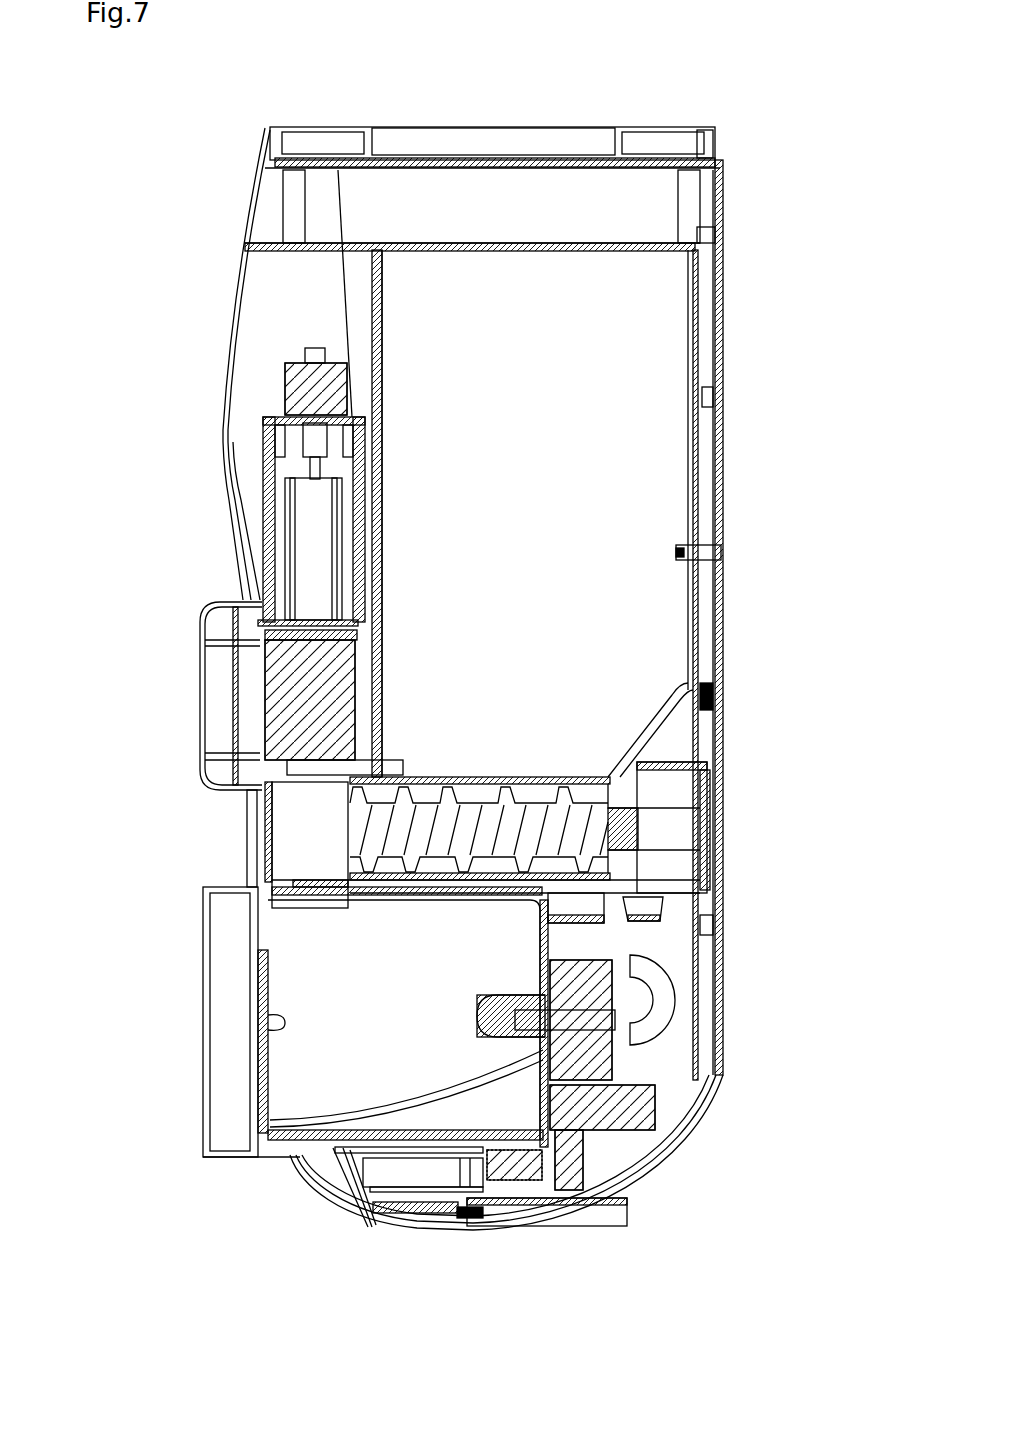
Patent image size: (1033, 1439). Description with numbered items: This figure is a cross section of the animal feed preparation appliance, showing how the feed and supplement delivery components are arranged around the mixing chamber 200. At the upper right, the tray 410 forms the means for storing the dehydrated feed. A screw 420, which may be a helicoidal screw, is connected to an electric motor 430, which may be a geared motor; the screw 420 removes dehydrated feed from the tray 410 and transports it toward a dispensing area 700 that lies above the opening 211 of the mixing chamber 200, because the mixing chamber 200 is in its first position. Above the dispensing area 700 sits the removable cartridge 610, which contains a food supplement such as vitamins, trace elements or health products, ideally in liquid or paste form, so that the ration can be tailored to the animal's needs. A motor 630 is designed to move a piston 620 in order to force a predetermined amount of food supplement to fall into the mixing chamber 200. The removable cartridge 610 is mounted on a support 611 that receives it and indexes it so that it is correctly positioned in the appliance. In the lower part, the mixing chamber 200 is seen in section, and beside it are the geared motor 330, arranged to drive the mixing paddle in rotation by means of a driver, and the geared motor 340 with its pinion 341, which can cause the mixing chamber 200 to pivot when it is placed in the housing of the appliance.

The mixing chamber 200 is at (298, 958).
The opening 211 is at (312, 895).
The geared motor 330 is at (603, 1053).
The geared motor 340 is at (610, 1115).
The pinion 341 is at (503, 1182).
The tray 410 is at (598, 608).
The screw 420 is at (568, 830).
The electric motor 430 is at (665, 787).
The removable cartridge 610 is at (298, 718).
The support 611 is at (222, 733).
The piston 620 is at (297, 637).
The motor 630 is at (297, 400).
The dispensing area 700 is at (206, 795).